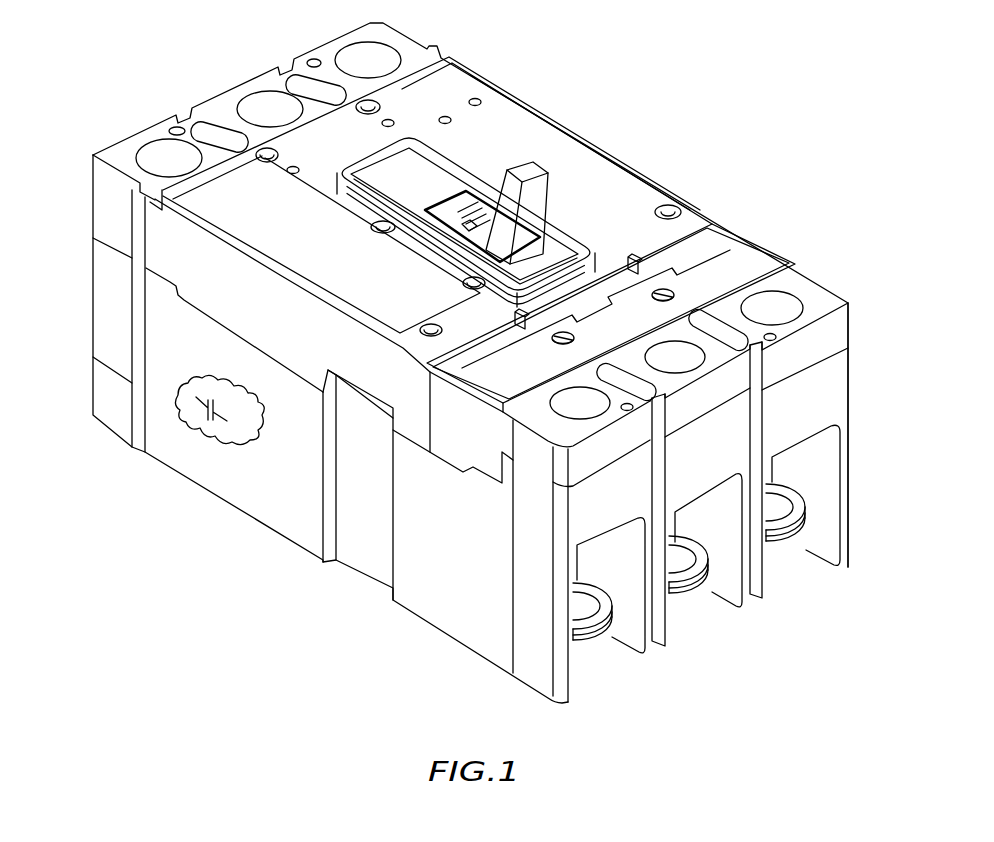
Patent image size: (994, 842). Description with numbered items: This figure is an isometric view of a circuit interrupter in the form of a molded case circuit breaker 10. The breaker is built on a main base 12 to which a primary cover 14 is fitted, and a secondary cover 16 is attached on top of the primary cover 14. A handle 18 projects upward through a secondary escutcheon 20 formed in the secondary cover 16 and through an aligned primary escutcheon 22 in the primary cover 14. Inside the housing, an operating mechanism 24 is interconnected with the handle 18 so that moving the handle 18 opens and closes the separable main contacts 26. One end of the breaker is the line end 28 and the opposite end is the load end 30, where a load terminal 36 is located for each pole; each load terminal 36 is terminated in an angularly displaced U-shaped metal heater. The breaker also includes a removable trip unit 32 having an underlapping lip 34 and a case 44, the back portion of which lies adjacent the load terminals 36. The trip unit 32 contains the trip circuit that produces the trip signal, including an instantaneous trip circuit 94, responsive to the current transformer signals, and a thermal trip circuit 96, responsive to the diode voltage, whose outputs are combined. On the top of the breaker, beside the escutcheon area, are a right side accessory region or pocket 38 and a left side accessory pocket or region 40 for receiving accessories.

The molded case circuit breaker 10 is at (212, 591).
The main base 12 is at (170, 470).
The primary cover 14 is at (93, 191).
The secondary cover 16 is at (690, 205).
The handle 18 is at (551, 184).
The secondary escutcheon 20 is at (386, 163).
The primary escutcheon 22 is at (463, 226).
The operating mechanism 24 is at (470, 236).
The separable main contacts 26 is at (232, 443).
The line end 28 is at (328, 42).
The load end 30 is at (848, 327).
The removable trip unit 32 is at (783, 258).
The underlapping lip 34 is at (405, 388).
The load terminal 36 is at (597, 625).
The right side accessory region 38 is at (577, 150).
The left side accessory pocket 40 is at (222, 190).
The case 44 is at (812, 305).
The instantaneous trip circuit 94 is at (734, 252).
The thermal trip circuit 96 is at (757, 257).